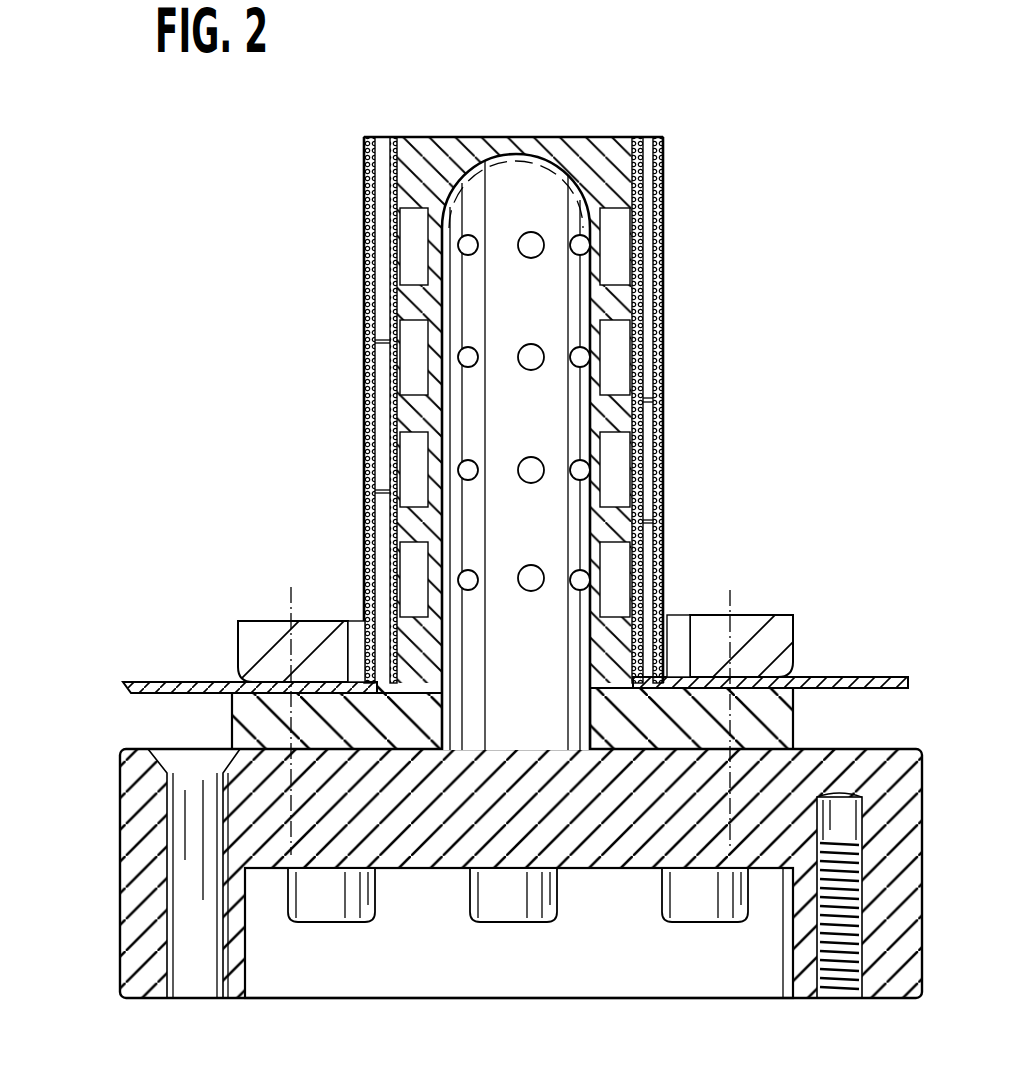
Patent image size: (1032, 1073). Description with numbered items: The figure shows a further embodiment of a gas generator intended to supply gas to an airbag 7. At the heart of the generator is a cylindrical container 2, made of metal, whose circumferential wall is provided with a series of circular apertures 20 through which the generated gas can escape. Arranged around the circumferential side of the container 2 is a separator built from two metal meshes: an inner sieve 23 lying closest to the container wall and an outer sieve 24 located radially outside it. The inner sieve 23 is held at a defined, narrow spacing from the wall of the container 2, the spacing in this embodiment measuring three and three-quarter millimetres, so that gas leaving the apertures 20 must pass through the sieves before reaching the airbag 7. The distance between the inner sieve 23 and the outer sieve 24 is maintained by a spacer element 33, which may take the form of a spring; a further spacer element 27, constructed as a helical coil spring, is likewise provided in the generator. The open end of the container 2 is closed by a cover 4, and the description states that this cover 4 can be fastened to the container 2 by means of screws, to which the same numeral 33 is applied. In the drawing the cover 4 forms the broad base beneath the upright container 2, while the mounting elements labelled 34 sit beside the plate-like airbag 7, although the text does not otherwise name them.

The container 2 is at (608, 152).
The cover 4 is at (146, 906).
The airbag 7 is at (852, 672).
The circular apertures 20 is at (543, 348).
The inner sieve 23 is at (658, 452).
The outer sieve 24 is at (664, 538).
The spacer element 27 is at (366, 412).
The spacer element 33 is at (366, 341).
The fastening nuts 34 is at (290, 602).